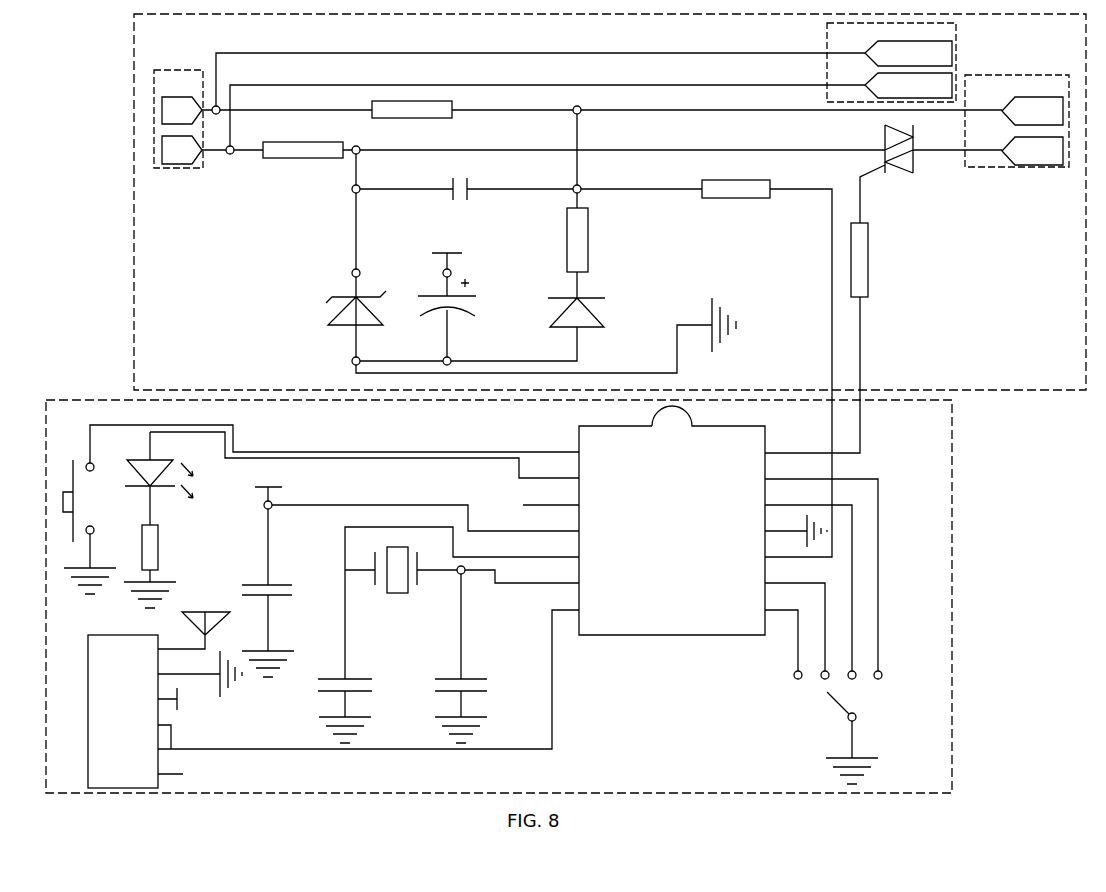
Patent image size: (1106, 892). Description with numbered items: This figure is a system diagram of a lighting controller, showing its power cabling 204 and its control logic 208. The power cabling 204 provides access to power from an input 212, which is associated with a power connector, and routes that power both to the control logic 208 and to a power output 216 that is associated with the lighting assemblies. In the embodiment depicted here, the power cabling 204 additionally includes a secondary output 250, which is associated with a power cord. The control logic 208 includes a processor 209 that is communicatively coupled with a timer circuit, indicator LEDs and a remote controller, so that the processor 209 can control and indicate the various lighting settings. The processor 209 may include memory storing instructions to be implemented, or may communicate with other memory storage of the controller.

The power cabling 204 is at (445, 44).
The control logic 208 is at (418, 429).
The input 212 is at (190, 94).
The power output 216 is at (1003, 99).
The secondary output 250 is at (866, 46).
The processor 209 is at (673, 635).